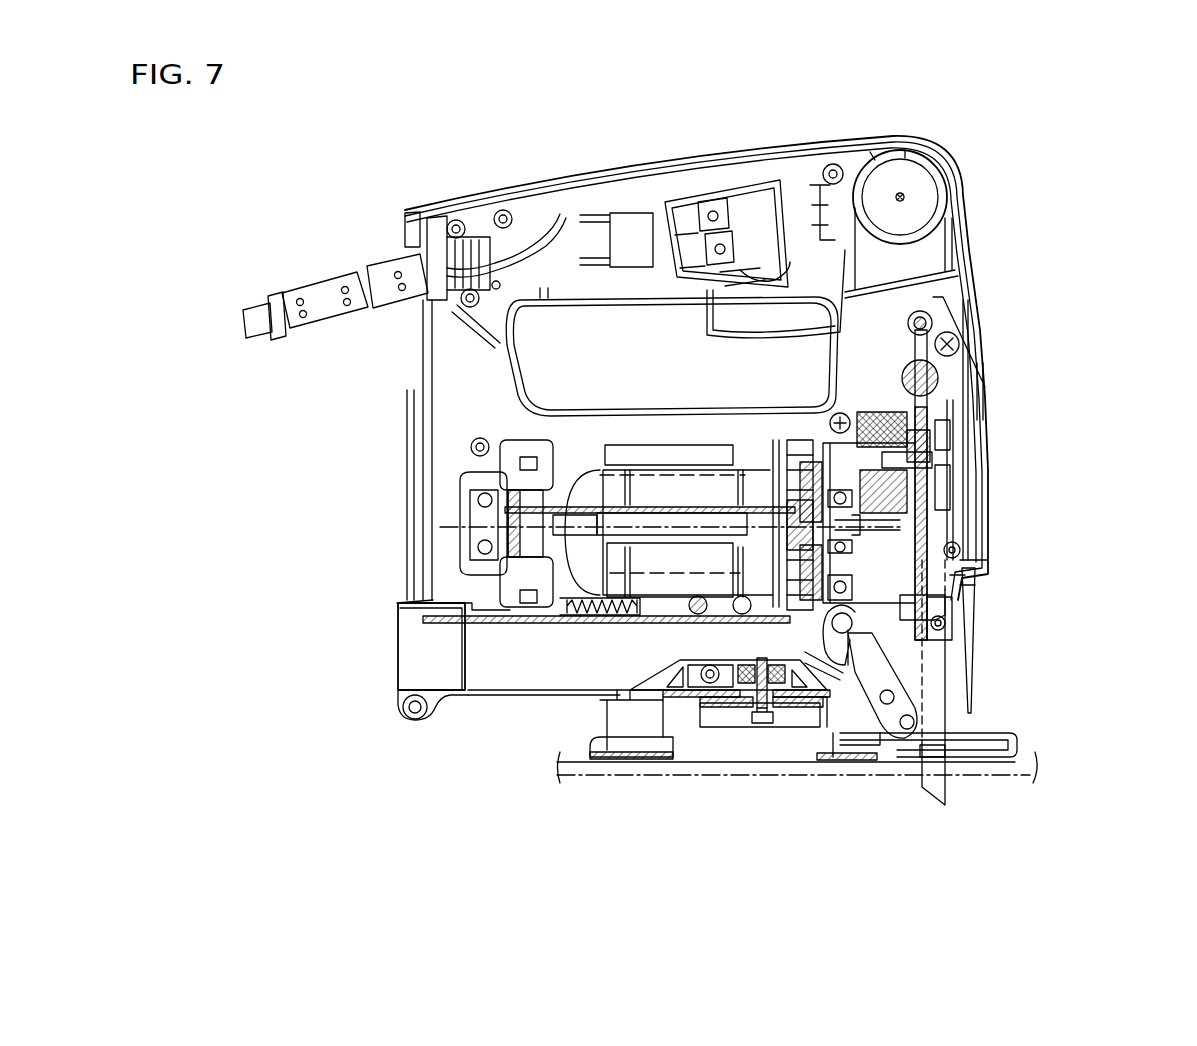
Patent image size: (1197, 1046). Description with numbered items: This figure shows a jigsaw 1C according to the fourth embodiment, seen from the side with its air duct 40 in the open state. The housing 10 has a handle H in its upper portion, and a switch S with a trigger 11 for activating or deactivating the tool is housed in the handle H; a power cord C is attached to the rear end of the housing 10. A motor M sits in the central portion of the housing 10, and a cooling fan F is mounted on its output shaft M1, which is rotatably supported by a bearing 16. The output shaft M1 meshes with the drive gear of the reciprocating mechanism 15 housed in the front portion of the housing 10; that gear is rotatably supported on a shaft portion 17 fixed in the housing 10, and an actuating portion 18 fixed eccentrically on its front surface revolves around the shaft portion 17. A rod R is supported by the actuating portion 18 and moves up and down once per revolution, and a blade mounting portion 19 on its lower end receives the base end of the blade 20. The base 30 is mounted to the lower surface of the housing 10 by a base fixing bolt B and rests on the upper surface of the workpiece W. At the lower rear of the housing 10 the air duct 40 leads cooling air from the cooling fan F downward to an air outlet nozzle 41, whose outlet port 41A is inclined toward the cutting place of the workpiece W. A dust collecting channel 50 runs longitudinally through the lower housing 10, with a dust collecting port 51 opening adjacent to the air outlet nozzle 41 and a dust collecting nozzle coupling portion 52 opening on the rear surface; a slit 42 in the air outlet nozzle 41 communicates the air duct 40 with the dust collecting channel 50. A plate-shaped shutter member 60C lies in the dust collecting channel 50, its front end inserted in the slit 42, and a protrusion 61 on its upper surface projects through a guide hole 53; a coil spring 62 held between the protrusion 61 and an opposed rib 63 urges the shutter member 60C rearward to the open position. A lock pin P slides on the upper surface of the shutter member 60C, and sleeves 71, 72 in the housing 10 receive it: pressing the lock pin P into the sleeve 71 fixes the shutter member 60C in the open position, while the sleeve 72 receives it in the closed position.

The jigsaw 1C is at (963, 105).
The housing 10 is at (427, 343).
The handle H is at (673, 150).
The switch S is at (745, 215).
The power cord C is at (302, 285).
The trigger 11 is at (757, 342).
The rod R is at (922, 405).
The shaft portion 17 is at (930, 432).
The actuating portion 18 is at (930, 460).
The reciprocating mechanism 15 is at (905, 495).
The output shaft M1 is at (967, 571).
The bearing 16 is at (943, 593).
The blade mounting portion 19 is at (955, 627).
The motor M is at (598, 445).
The sleeve 71 is at (692, 596).
The sleeve 72 is at (742, 596).
The cooling fan F is at (797, 425).
The protrusion 61 is at (597, 627).
The guide hole 53 is at (588, 625).
The dust collecting nozzle coupling portion 52 is at (447, 700).
The shutter member 60C is at (480, 690).
The dust collecting channel 50 is at (516, 682).
The coil spring 62 is at (605, 705).
The rib 63 is at (662, 700).
The lock pin P is at (757, 708).
The slit 42 is at (745, 703).
The base fixing bolt B is at (762, 724).
The dust collecting port 51 is at (788, 690).
The air outlet nozzle 41 is at (840, 640).
The air duct 40 is at (868, 632).
The outlet port 41A is at (892, 662).
The blade 20 is at (940, 723).
The base 30 is at (1017, 736).
The workpiece W is at (1040, 776).